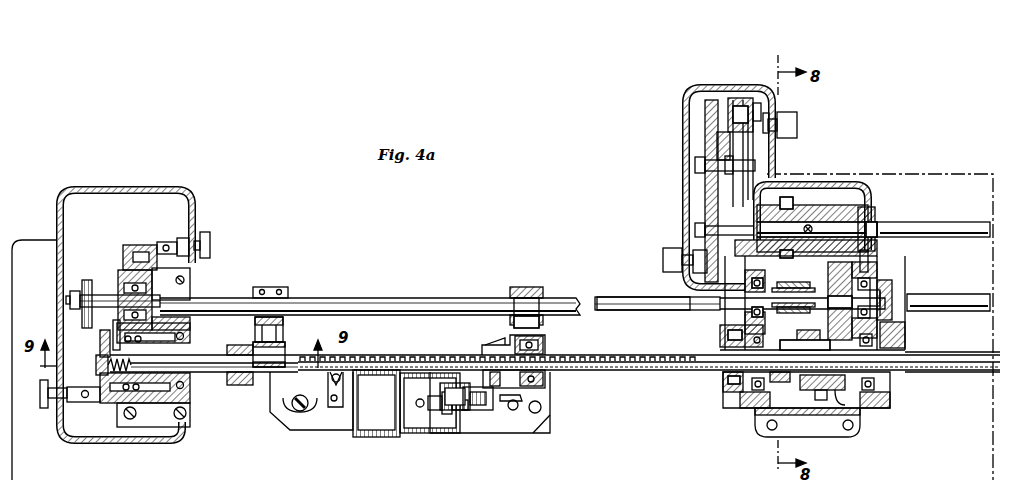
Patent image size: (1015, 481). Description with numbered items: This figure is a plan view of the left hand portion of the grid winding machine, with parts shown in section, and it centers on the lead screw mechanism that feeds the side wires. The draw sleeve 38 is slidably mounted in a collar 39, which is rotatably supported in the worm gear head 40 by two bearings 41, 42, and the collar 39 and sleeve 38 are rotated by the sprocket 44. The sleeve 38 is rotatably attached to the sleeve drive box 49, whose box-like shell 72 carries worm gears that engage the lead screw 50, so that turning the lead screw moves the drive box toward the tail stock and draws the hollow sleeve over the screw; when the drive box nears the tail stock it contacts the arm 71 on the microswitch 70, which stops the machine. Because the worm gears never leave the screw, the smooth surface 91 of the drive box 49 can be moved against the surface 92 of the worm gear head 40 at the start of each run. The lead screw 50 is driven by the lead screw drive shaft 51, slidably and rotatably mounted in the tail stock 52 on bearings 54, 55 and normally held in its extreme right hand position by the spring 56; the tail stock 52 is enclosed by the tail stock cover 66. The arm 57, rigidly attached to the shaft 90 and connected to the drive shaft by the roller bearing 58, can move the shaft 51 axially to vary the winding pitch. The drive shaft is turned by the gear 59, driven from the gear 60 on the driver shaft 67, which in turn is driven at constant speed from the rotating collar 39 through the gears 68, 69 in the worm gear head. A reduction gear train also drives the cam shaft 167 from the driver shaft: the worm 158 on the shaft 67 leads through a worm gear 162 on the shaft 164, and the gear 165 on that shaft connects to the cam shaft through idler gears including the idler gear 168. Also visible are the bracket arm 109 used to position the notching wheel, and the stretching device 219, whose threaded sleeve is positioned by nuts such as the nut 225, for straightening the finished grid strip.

The draw sleeve 38 is at (948, 356).
The collar 39 is at (787, 397).
The worm gear head 40 is at (745, 399).
The bearing 41 is at (766, 344).
The bearing 42 is at (888, 336).
The sprocket 44 is at (814, 400).
The sleeve drive box 49 is at (555, 380).
The lead screw 50 is at (437, 354).
The lead screw drive shaft 51 is at (224, 368).
The tail stock 52 is at (186, 294).
The bearing 54 is at (191, 338).
The bearing 55 is at (121, 409).
The spring 56 is at (106, 365).
The arm 57 is at (256, 332).
The roller bearing 58 is at (262, 390).
The gear 59 is at (100, 341).
The gear 60 is at (80, 283).
The tail stock cover 66 is at (197, 211).
The driver shaft 67 is at (104, 292).
The gear 68 is at (869, 262).
The gear 69 is at (862, 417).
The microswitch 70 is at (360, 432).
The arm 71 is at (327, 410).
The box-like shell 72 is at (545, 341).
The shaft 90 is at (311, 304).
The smooth surface 91 is at (548, 348).
The surface 92 is at (724, 381).
The bracket arm 109 is at (716, 138).
The worm 158 is at (786, 287).
The worm gear 162 is at (820, 210).
The shaft 164 is at (870, 225).
The gear 165 is at (705, 205).
The cam shaft 167 is at (920, 232).
The idler gear 168 is at (712, 150).
The stretching device 219 is at (857, 478).
The nut 225 is at (745, 471).